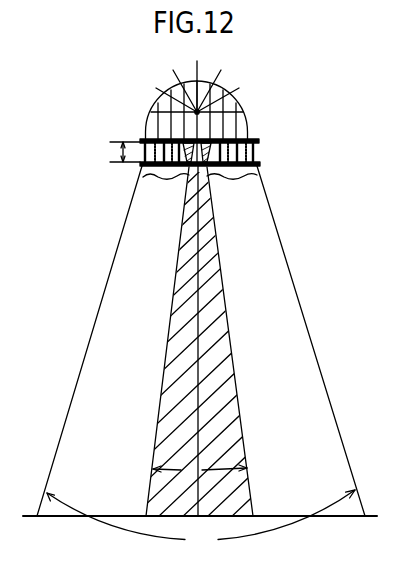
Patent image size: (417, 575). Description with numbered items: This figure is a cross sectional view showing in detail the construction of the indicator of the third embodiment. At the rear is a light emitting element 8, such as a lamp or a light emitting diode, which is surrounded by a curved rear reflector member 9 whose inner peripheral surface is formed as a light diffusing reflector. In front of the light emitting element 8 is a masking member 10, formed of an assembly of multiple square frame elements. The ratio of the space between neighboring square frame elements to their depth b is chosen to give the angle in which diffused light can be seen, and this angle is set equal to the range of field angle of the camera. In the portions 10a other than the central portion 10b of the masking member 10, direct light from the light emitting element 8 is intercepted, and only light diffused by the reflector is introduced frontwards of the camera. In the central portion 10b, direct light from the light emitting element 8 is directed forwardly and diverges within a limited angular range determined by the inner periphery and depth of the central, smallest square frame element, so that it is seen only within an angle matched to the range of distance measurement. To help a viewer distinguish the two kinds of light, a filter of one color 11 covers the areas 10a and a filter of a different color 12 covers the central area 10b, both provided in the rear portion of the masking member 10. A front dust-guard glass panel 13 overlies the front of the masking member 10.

The light emitting element 8 is at (198, 111).
The curved rear reflector member 9 is at (241, 100).
The masking member 10 is at (263, 138).
The portions other than the central portion 10a is at (201, 341).
The central portion 10b is at (185, 223).
The filter of one color 11 is at (165, 138).
The filter of different color 12 is at (185, 90).
The front dust-guard glass panel 13 is at (140, 166).
The depth b is at (118, 152).